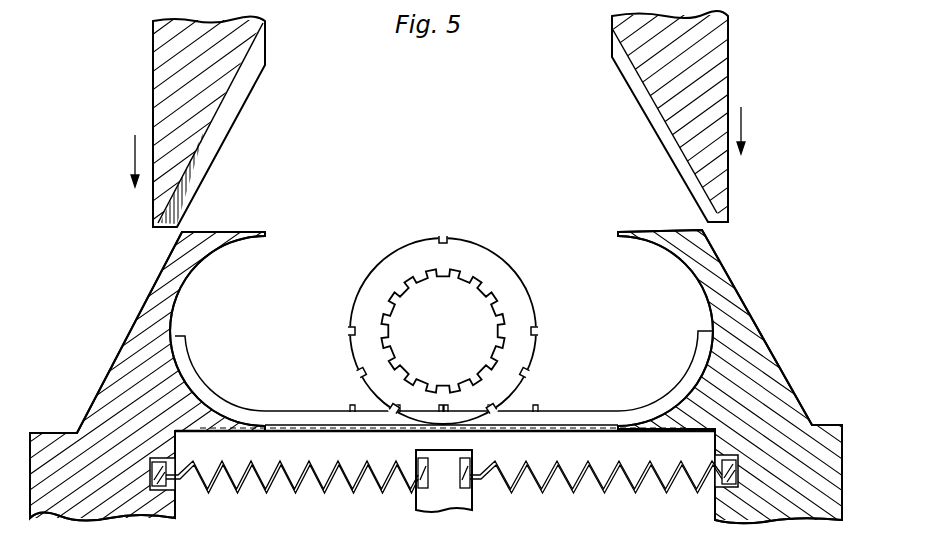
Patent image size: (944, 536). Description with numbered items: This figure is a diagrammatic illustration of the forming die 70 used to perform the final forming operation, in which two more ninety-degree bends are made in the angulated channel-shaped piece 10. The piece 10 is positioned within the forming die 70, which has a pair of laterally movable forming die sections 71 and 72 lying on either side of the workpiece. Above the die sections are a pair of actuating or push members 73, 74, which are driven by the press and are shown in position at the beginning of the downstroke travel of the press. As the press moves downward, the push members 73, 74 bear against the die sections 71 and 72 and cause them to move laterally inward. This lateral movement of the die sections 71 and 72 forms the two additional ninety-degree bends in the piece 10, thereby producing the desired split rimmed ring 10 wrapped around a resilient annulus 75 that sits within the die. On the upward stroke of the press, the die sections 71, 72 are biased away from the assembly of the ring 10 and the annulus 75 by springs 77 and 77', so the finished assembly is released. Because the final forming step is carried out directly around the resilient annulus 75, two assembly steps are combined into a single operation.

The angulated channel-shaped piece 10 is at (597, 408).
The forming die 70 is at (228, 216).
The forming die section 71 is at (141, 310).
The forming die section 72 is at (743, 326).
The actuating or push member 73 is at (153, 75).
The actuating or push member 74 is at (730, 80).
The resilient annulus 75 is at (473, 240).
The spring 77 is at (292, 498).
The spring 77' is at (596, 492).